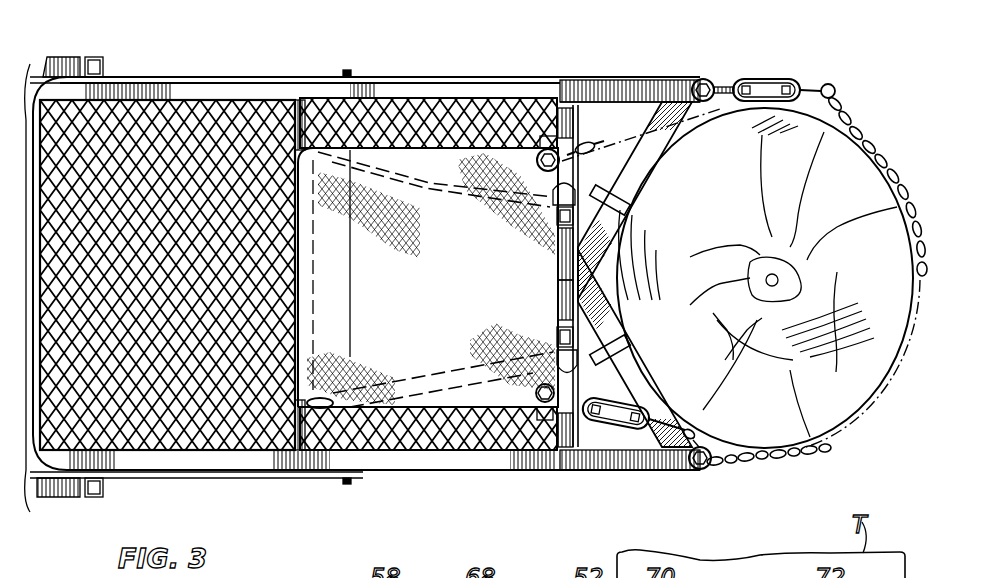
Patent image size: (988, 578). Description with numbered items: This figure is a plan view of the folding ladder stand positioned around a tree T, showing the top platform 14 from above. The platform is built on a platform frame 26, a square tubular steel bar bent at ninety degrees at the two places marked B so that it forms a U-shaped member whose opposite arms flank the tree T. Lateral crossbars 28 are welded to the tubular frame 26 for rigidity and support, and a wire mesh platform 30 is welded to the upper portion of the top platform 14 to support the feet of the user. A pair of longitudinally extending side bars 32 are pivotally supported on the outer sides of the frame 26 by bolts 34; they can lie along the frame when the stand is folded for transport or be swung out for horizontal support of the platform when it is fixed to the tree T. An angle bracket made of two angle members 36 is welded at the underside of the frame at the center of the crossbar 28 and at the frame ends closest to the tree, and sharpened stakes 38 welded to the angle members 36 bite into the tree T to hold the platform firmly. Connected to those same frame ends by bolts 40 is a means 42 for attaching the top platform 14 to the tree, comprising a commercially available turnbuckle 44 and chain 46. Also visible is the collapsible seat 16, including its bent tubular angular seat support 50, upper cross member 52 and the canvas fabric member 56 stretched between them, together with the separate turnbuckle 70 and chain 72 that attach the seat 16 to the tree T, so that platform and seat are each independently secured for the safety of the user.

The top platform 14 is at (325, 70).
The collapsible seat 16 is at (449, 410).
The platform frame 26 is at (500, 80).
The lateral crossbars 28 is at (287, 130).
The wire mesh platform 30 is at (190, 130).
The side bars 32 is at (132, 76).
The bolts 34 is at (352, 72).
The angle members 36 is at (660, 102).
The sharpened stakes 38 is at (632, 196).
The bolts 40 is at (707, 79).
The means for attaching top platform to tree 42 is at (862, 97).
The turnbuckle 44 is at (793, 80).
The chain 46 is at (868, 137).
The angular seat support 50 is at (437, 190).
The upper cross member 52 is at (547, 136).
The fabric member 56 is at (303, 155).
The turnbuckle 70 is at (600, 430).
The chain 72 is at (597, 138).
The bend locations B is at (61, 291).
The tree T is at (857, 383).